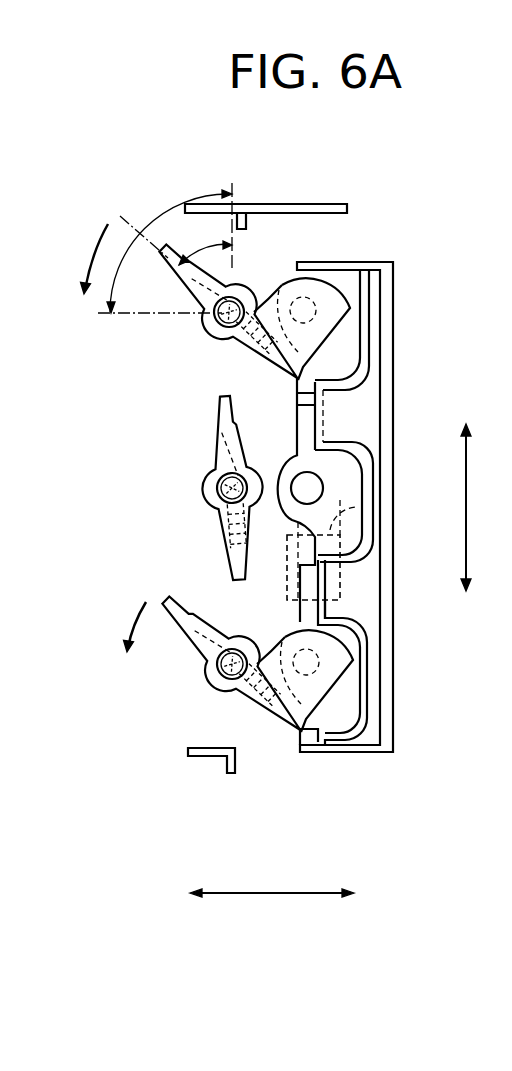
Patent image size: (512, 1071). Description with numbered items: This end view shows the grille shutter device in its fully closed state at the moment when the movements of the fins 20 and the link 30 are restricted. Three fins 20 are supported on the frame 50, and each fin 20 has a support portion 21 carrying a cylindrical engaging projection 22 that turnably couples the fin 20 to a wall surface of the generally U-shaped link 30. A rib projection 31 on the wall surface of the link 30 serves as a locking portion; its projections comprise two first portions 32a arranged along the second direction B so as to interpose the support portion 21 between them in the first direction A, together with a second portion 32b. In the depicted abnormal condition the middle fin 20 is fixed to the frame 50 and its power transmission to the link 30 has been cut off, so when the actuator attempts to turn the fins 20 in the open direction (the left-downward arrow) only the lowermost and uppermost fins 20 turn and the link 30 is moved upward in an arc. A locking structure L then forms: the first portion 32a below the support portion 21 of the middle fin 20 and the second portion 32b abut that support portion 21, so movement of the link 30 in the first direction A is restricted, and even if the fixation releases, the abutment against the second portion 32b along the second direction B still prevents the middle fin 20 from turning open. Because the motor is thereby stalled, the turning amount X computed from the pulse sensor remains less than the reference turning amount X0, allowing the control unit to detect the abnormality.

The fin 20 is at (196, 403).
The support portion 21 is at (280, 285).
The engaging projection 22 is at (315, 278).
The link 30 is at (370, 262).
The rib projection 31 is at (371, 364).
The first portion 32a is at (330, 440).
The second portion 32b is at (323, 541).
The frame 50 is at (307, 203).
The locking structure L is at (332, 509).
The reference turning amount X0 is at (169, 250).
The turning amount X is at (205, 245).
The first direction A is at (479, 507).
The second direction B is at (272, 911).